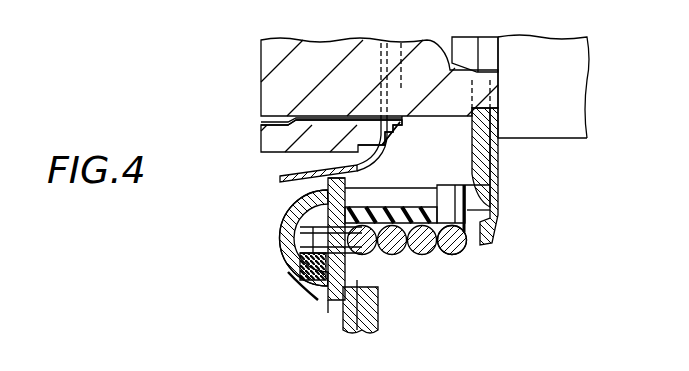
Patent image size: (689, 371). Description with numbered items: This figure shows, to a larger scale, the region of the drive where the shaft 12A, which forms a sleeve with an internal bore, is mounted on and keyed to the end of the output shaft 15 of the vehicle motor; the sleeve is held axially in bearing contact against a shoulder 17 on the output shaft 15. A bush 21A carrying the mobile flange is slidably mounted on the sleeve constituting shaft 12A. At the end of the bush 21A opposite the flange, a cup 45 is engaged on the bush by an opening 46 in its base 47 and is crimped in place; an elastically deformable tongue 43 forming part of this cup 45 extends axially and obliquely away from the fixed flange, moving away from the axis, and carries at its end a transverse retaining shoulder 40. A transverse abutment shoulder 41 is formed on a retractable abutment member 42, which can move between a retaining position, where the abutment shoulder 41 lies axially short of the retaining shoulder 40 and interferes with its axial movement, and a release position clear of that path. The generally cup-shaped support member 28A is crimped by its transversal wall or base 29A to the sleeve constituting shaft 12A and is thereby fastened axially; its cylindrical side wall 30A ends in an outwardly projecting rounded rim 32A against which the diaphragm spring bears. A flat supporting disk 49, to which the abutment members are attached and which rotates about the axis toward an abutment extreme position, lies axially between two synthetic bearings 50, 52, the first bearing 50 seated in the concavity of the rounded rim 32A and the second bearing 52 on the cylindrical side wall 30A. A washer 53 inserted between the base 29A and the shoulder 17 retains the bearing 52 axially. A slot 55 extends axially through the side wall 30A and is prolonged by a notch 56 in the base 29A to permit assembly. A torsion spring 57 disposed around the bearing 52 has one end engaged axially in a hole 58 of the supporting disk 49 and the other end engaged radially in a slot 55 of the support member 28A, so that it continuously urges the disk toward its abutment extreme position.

The shaft 12A is at (258, 68).
The bush 21A is at (259, 132).
The shoulder 17 is at (497, 46).
The output shaft 15 is at (553, 99).
The opening 46 is at (392, 110).
The base 47 is at (386, 146).
The cup 45 is at (385, 165).
The transverse retaining shoulder 40 is at (281, 180).
The retractable abutment member 42 is at (334, 183).
The elastically deformable tongue 43 is at (307, 175).
The transverse abutment shoulder 41 is at (351, 173).
The base 29A is at (480, 146).
The washer 53 is at (488, 234).
The notch 56 is at (471, 172).
The cylindrical side wall 30A is at (389, 254).
The bearing 52 is at (427, 256).
The torsion spring 57 is at (467, 250).
The slot 55 is at (351, 243).
The bearing 50 is at (300, 262).
The hole 58 is at (338, 290).
The supporting disk 49 is at (324, 312).
The rounded rim 32A is at (287, 240).
The support member 28A is at (284, 266).